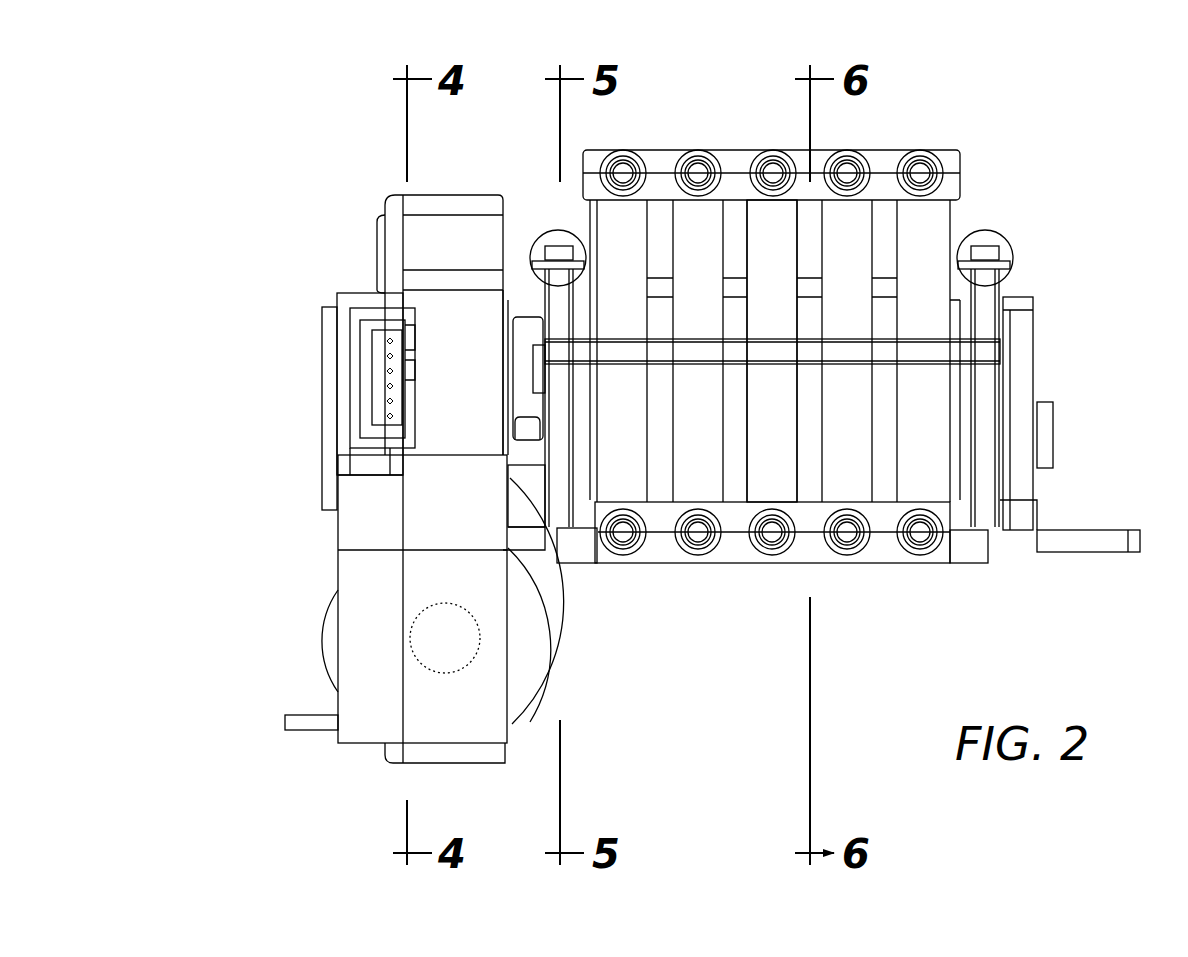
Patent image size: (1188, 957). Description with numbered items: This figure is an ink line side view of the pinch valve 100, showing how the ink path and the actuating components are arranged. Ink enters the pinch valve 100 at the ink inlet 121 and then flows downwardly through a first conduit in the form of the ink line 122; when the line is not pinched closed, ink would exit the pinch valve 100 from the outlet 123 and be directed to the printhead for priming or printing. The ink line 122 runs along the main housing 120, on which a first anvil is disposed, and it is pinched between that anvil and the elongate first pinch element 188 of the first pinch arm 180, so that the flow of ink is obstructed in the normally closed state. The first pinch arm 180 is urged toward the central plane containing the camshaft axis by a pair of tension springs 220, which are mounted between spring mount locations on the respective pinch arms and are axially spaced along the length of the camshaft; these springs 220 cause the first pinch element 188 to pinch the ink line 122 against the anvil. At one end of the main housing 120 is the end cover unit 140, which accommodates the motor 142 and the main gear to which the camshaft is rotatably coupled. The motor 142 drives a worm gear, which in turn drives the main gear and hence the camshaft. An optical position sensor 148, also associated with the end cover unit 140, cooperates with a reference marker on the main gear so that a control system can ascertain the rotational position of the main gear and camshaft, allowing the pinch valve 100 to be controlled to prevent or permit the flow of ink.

The pinch valve 100 is at (210, 142).
The main housing 120 is at (1028, 312).
The ink inlet 121 is at (920, 173).
The ink line 122 is at (932, 223).
The outlet 123 is at (920, 532).
The end cover unit 140 is at (357, 745).
The motor 142 is at (332, 642).
The position sensor 148 is at (332, 372).
The first pinch arm 180 is at (985, 354).
The first pinch element 188 is at (775, 345).
The spring 220 is at (1003, 243).